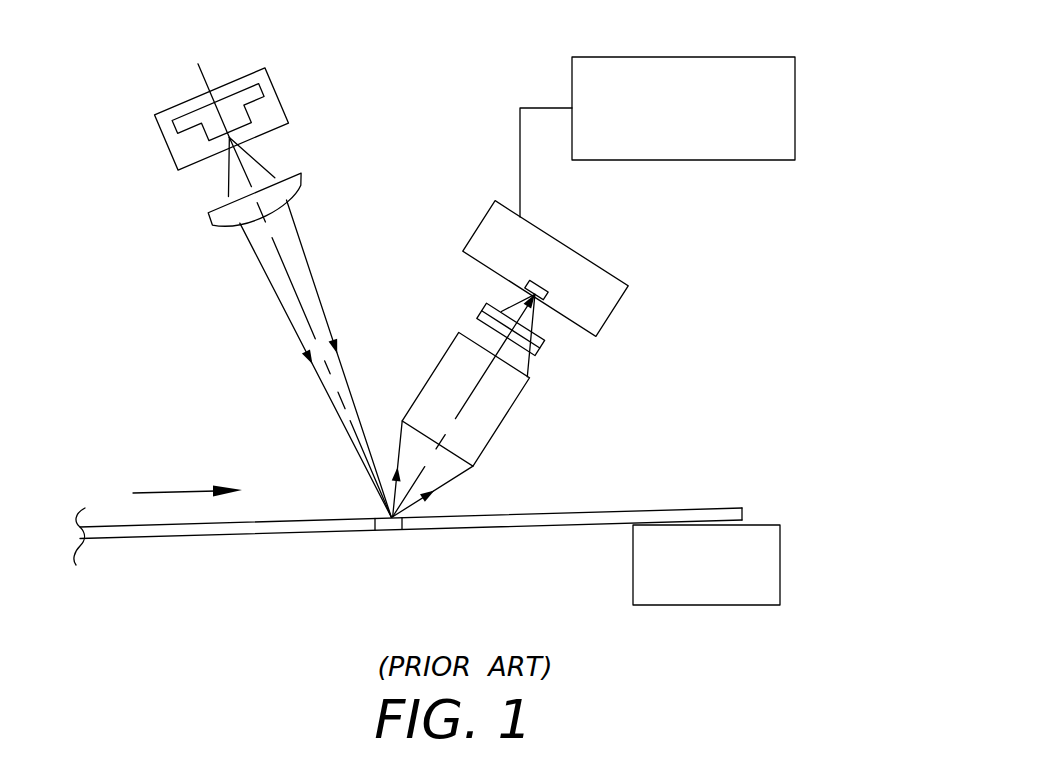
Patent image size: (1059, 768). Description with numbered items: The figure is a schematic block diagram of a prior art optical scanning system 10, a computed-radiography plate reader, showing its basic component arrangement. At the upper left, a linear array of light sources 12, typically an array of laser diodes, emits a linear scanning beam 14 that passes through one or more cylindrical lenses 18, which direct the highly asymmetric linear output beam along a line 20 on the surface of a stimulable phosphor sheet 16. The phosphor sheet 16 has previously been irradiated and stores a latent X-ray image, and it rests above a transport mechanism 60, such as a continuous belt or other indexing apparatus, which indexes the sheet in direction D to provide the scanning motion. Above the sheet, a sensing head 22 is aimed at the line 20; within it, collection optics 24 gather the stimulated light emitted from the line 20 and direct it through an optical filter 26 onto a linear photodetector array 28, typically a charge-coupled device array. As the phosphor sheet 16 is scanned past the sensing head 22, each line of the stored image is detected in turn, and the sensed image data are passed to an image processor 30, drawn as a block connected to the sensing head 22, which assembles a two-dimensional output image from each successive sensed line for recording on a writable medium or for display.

The optical scanning system 10 is at (828, 69).
The linear array of light sources 12 is at (283, 107).
The linear scanning beam 14 is at (377, 482).
The stimulable phosphor sheet 16 is at (693, 508).
The cylindrical lens 18 is at (303, 180).
The line 20 is at (385, 530).
The sensing head 22 is at (514, 336).
The collection optics 24 is at (490, 412).
The optical filter 26 is at (545, 350).
The linear photodetector array 28 is at (548, 296).
The image processor 30 is at (682, 150).
The transport mechanism 60 is at (648, 570).
The direction D is at (177, 492).